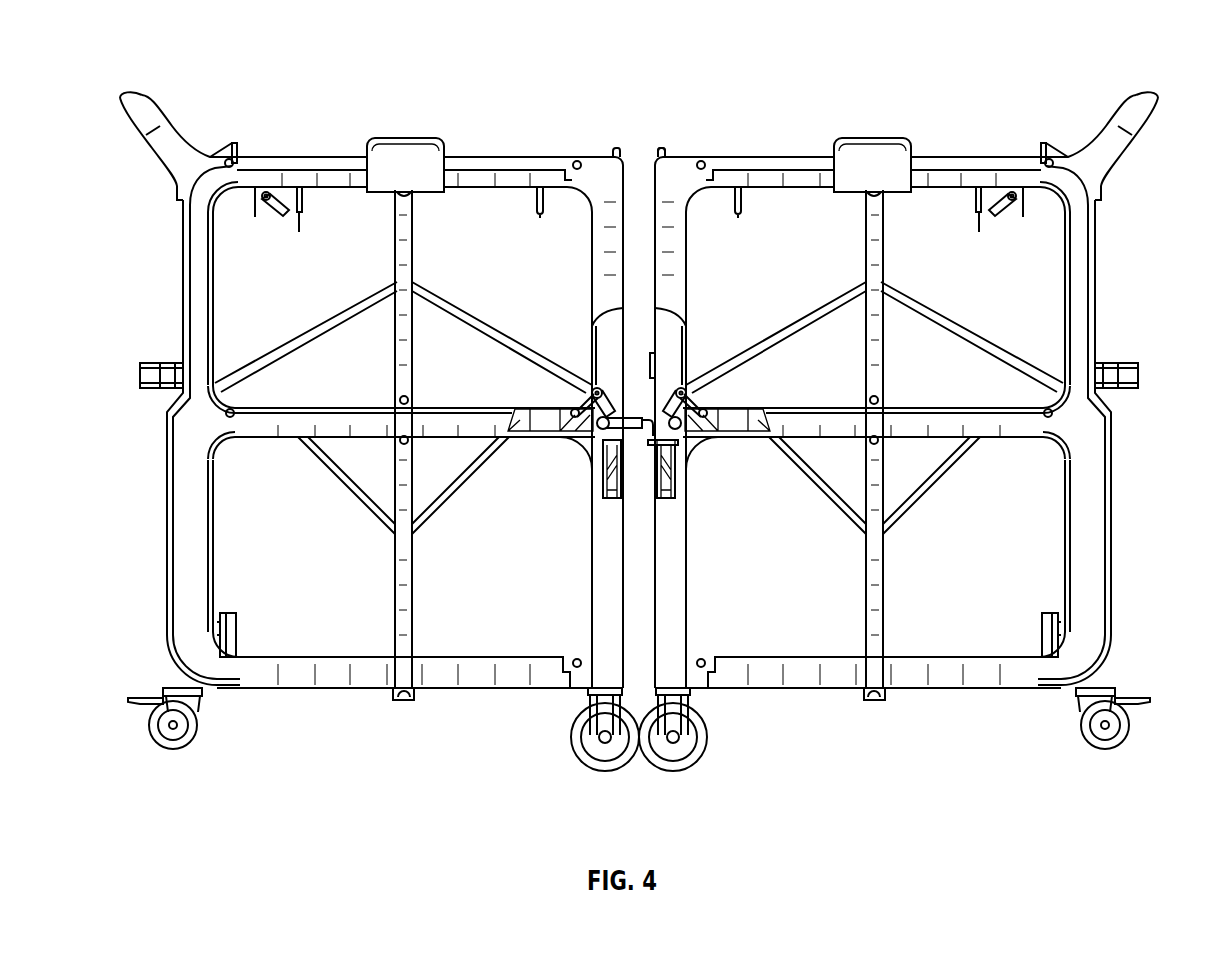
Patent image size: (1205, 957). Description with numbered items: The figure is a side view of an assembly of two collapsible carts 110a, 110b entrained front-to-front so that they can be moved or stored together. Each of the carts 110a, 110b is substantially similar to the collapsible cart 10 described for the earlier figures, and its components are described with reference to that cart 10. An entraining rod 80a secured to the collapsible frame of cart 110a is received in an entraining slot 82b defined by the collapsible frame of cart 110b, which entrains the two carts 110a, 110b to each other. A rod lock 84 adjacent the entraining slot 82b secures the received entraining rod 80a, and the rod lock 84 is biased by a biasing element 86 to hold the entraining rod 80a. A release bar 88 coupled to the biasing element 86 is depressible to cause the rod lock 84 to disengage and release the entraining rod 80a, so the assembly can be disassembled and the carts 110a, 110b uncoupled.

The collapsible cart 10 is at (150, 70).
The collapsible cart 110a is at (515, 160).
The collapsible cart 110b is at (735, 160).
The release bar 88 is at (660, 147).
The entraining rod 80a is at (646, 430).
The entraining slot 82b is at (652, 436).
The rod lock 84 is at (678, 444).
The biasing element 86 is at (674, 468).